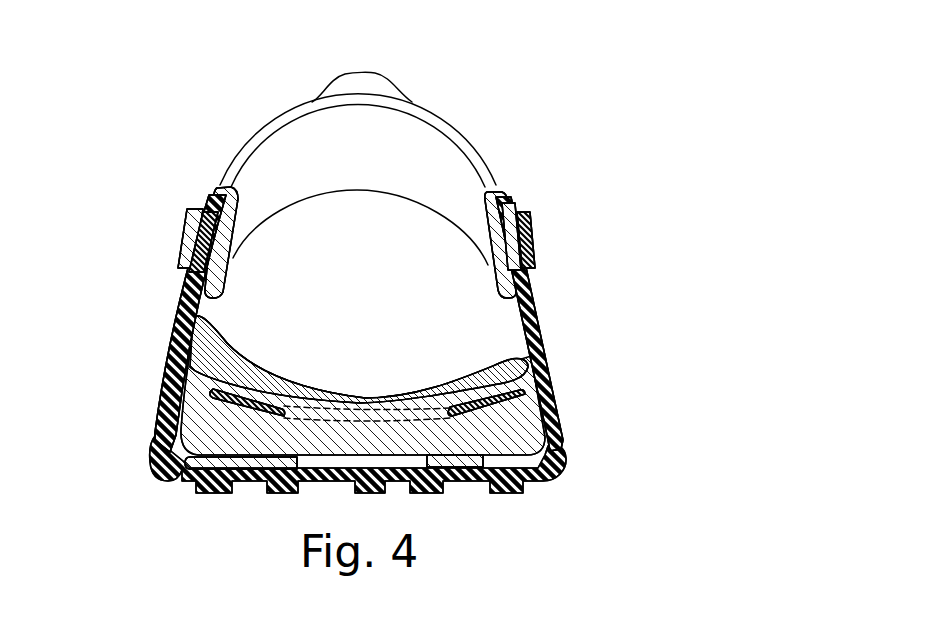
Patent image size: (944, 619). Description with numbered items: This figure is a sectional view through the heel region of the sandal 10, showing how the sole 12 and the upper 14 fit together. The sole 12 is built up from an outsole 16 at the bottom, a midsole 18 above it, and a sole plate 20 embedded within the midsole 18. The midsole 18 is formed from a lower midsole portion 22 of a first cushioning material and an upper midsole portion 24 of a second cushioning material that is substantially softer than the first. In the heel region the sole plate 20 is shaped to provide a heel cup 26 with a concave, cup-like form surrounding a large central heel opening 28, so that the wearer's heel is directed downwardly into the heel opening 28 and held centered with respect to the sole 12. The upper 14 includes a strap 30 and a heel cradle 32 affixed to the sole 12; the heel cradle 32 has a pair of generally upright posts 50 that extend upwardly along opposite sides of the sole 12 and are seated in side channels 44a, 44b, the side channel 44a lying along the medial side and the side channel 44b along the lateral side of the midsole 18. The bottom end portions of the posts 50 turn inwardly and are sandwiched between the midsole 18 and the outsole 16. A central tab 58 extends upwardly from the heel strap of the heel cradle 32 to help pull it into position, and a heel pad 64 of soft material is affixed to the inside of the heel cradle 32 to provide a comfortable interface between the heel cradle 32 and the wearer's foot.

The sandal 10 is at (590, 158).
The sole 12 is at (148, 386).
The upper 14 is at (190, 175).
The outsole 16 is at (520, 488).
The midsole 18 is at (293, 377).
The sole plate 20 is at (527, 392).
The lower midsole portion 22 is at (533, 427).
The upper midsole portion 24 is at (525, 330).
The heel cup 26 is at (249, 396).
The heel opening 28 is at (430, 383).
The strap 30 is at (533, 246).
The heel cradle 32 is at (380, 113).
The side channel 44a is at (478, 458).
The side channel 44b is at (190, 460).
The upright posts 50 is at (177, 331).
The central tab 58 is at (363, 80).
The heel pad 64 is at (400, 132).